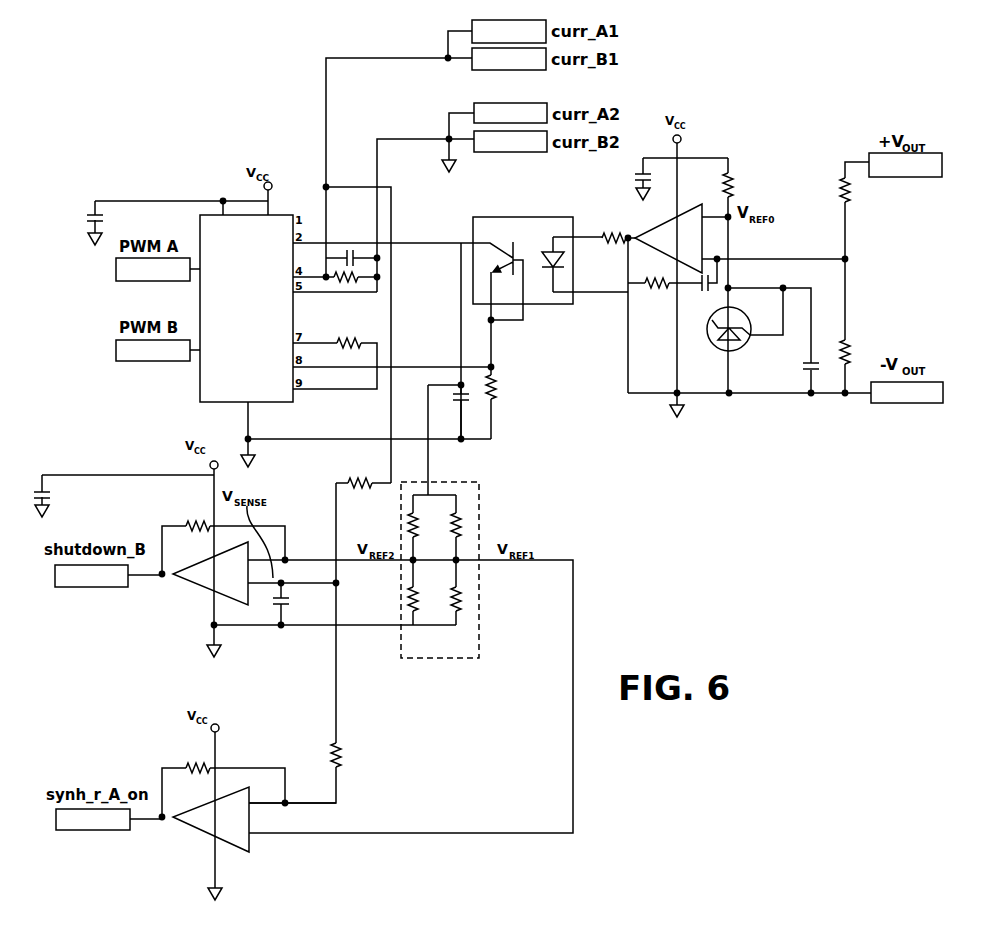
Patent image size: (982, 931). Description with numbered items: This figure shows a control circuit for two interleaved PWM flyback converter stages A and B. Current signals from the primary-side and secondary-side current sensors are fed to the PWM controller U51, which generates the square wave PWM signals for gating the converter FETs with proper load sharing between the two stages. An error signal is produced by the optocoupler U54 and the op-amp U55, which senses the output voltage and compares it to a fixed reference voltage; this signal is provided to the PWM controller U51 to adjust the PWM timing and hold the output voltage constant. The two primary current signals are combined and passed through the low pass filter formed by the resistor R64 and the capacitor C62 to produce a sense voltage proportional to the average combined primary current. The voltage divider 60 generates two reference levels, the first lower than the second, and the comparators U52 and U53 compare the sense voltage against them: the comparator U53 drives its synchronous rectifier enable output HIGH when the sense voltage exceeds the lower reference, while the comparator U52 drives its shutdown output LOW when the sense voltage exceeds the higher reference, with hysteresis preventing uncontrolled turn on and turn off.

The PWM controller U51 is at (246, 308).
The comparator U52 is at (210, 573).
The comparator U53 is at (211, 819).
The optocoupler U54 is at (523, 268).
The op-amp U55 is at (668, 238).
The resistor R64 is at (363, 476).
The capacitor C62 is at (301, 604).
The voltage divider 60 is at (481, 518).